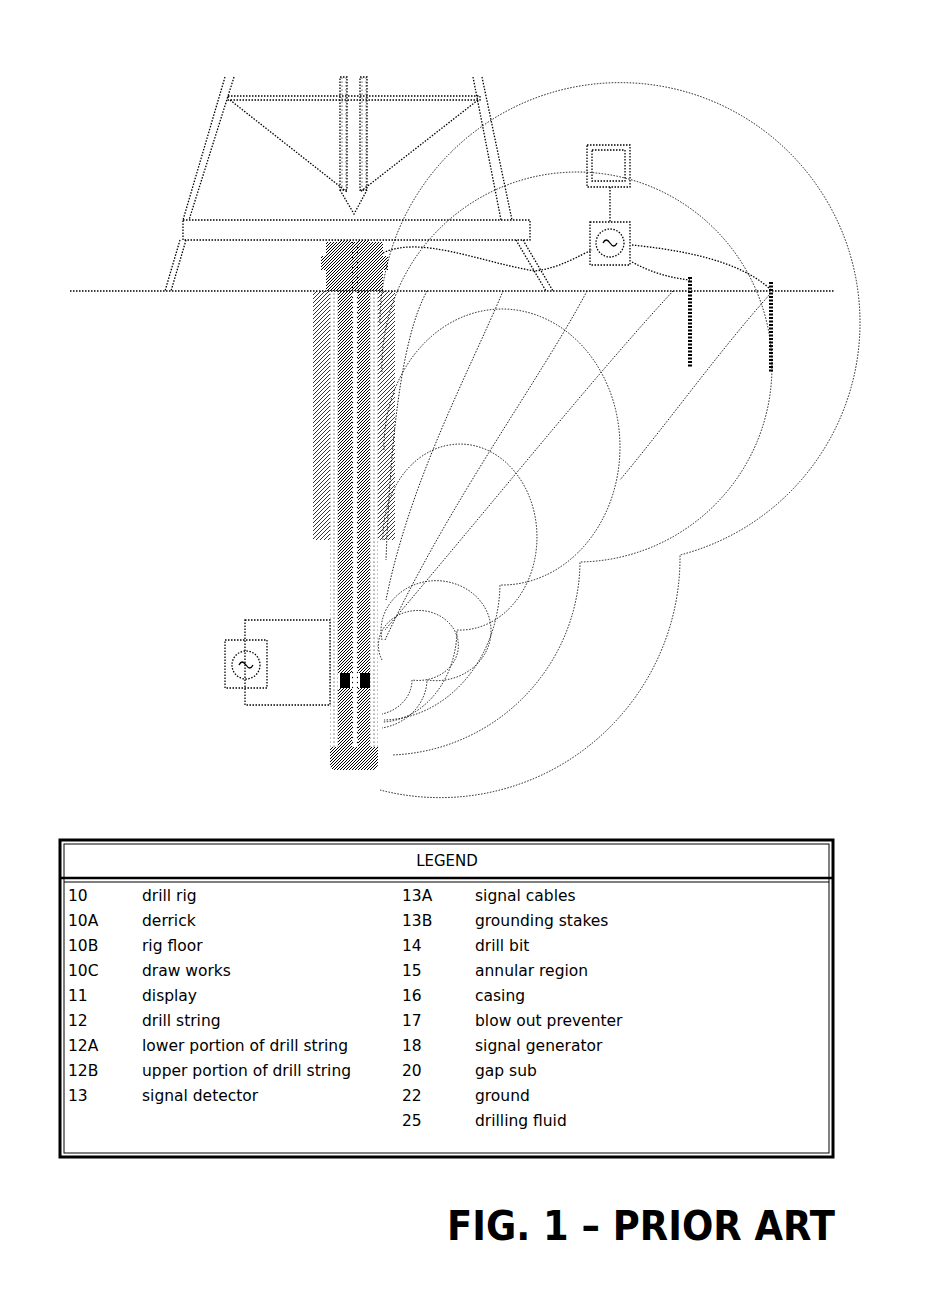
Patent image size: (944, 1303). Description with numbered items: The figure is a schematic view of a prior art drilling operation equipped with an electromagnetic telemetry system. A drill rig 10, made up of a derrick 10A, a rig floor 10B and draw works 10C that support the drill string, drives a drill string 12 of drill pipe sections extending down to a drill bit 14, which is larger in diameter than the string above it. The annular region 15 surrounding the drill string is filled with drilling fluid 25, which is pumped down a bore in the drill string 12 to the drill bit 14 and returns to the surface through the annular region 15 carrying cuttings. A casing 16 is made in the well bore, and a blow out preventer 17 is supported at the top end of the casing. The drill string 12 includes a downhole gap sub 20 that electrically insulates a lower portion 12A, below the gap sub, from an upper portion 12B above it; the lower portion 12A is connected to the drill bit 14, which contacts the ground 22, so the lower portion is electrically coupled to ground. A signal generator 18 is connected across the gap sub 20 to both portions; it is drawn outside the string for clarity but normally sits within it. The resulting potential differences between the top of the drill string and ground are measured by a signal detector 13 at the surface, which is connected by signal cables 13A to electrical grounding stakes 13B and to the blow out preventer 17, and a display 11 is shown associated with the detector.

The drill rig 10 is at (339, 154).
The derrick 10A is at (485, 143).
The rig floor 10B is at (185, 228).
The draw works 10C is at (350, 200).
The display 11 is at (620, 146).
The drill string 12 is at (300, 497).
The lower portion of drill string 12A is at (345, 723).
The upper portion of drill string 12B is at (345, 580).
The signal detector 13 is at (620, 222).
The signal cables 13A is at (538, 270).
The grounding stakes 13B is at (775, 292).
The drill bit 14 is at (340, 765).
The annular region 15 is at (335, 523).
The casing 16 is at (320, 453).
The blow out preventer 17 is at (325, 273).
The signal generator 18 is at (225, 665).
The gap sub 20 is at (367, 678).
The ground 22 is at (700, 722).
The drilling fluid 25 is at (352, 348).